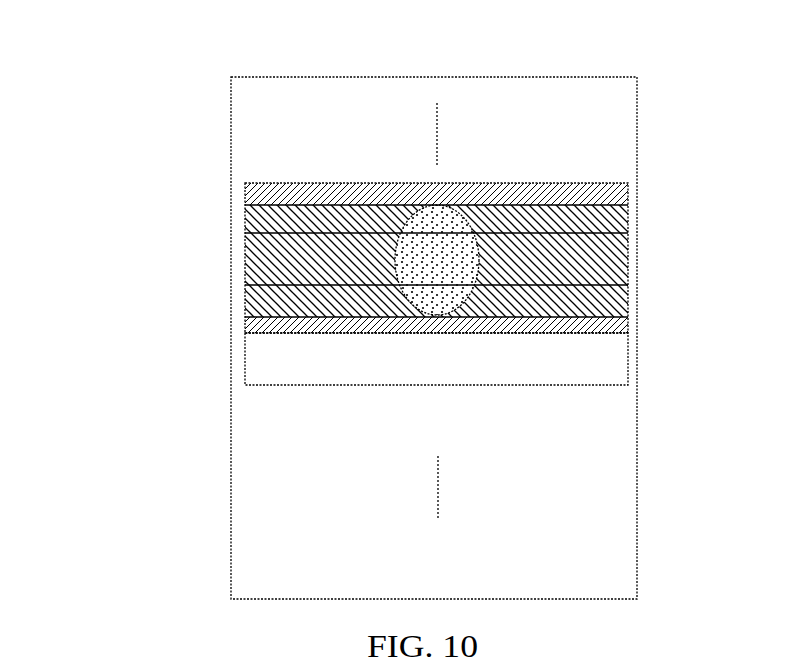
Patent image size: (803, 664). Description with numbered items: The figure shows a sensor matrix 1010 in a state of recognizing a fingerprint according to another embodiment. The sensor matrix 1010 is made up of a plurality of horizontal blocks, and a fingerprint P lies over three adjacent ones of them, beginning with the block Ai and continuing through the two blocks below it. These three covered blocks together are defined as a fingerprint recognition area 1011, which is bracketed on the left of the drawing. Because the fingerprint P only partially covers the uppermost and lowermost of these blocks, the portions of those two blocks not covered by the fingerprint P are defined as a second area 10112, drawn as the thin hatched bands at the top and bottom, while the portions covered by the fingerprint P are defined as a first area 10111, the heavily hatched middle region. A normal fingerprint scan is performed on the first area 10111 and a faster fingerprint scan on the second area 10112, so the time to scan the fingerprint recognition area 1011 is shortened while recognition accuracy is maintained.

The sensor matrix 1010 is at (403, 35).
The fingerprint recognition area 1011 is at (125, 203).
The first area 10111 is at (633, 207).
The second area 10112 is at (633, 185).
The fingerprint P is at (438, 308).
The block A i Ai is at (230, 185).